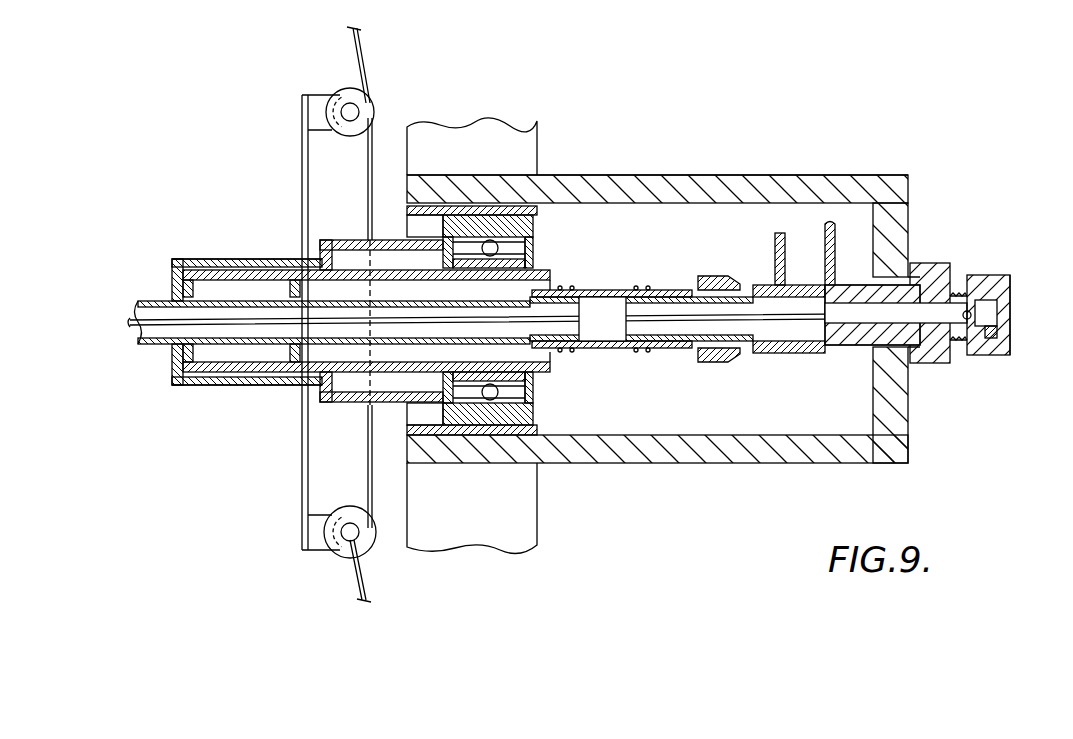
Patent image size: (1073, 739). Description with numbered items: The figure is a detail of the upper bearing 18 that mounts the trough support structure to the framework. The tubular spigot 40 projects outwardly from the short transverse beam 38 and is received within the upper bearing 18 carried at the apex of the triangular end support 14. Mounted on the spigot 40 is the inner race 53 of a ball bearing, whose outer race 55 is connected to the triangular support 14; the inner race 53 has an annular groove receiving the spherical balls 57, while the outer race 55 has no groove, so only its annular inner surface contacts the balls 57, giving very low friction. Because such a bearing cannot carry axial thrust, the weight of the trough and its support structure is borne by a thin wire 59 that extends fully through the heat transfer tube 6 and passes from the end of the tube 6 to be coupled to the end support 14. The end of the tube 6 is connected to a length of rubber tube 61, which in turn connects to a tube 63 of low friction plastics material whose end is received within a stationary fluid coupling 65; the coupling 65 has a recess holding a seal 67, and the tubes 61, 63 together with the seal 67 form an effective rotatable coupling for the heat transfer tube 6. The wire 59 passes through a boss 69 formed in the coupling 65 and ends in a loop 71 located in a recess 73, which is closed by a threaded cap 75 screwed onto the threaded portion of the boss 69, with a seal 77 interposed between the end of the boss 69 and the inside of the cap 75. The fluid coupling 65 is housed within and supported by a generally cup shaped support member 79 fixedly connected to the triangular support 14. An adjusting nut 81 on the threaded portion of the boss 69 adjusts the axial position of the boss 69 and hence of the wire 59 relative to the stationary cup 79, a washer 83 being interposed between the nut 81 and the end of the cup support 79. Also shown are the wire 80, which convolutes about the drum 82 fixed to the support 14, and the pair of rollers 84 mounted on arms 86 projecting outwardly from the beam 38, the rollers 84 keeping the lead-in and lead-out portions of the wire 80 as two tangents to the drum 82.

The heat transfer tube 6 is at (150, 346).
The triangular end support 14 is at (515, 532).
The upper bearing 18 is at (582, 150).
The short transverse beam 38 is at (218, 386).
The tubular spigot 40 is at (310, 380).
The inner race 53 is at (535, 378).
The outer race 55 is at (515, 422).
The spherical ball 57 is at (535, 400).
The thin wire 59 is at (165, 292).
The rubber tube 61 is at (612, 290).
The tube of low friction plastics material 63 is at (684, 294).
The stationary fluid coupling 65 is at (758, 293).
The seal 67 is at (706, 350).
The boss 69 is at (832, 345).
The loop 71 is at (950, 275).
The recess 73 is at (986, 356).
The threaded cap 75 is at (1006, 300).
The seal 77 is at (993, 275).
The cup shaped support member 79 is at (757, 452).
The wire 80 is at (372, 58).
The adjusting nut 81 is at (952, 366).
The drum 82 is at (372, 405).
The washer 83 is at (912, 366).
The roller 84 is at (342, 92).
The arm 86 is at (300, 187).